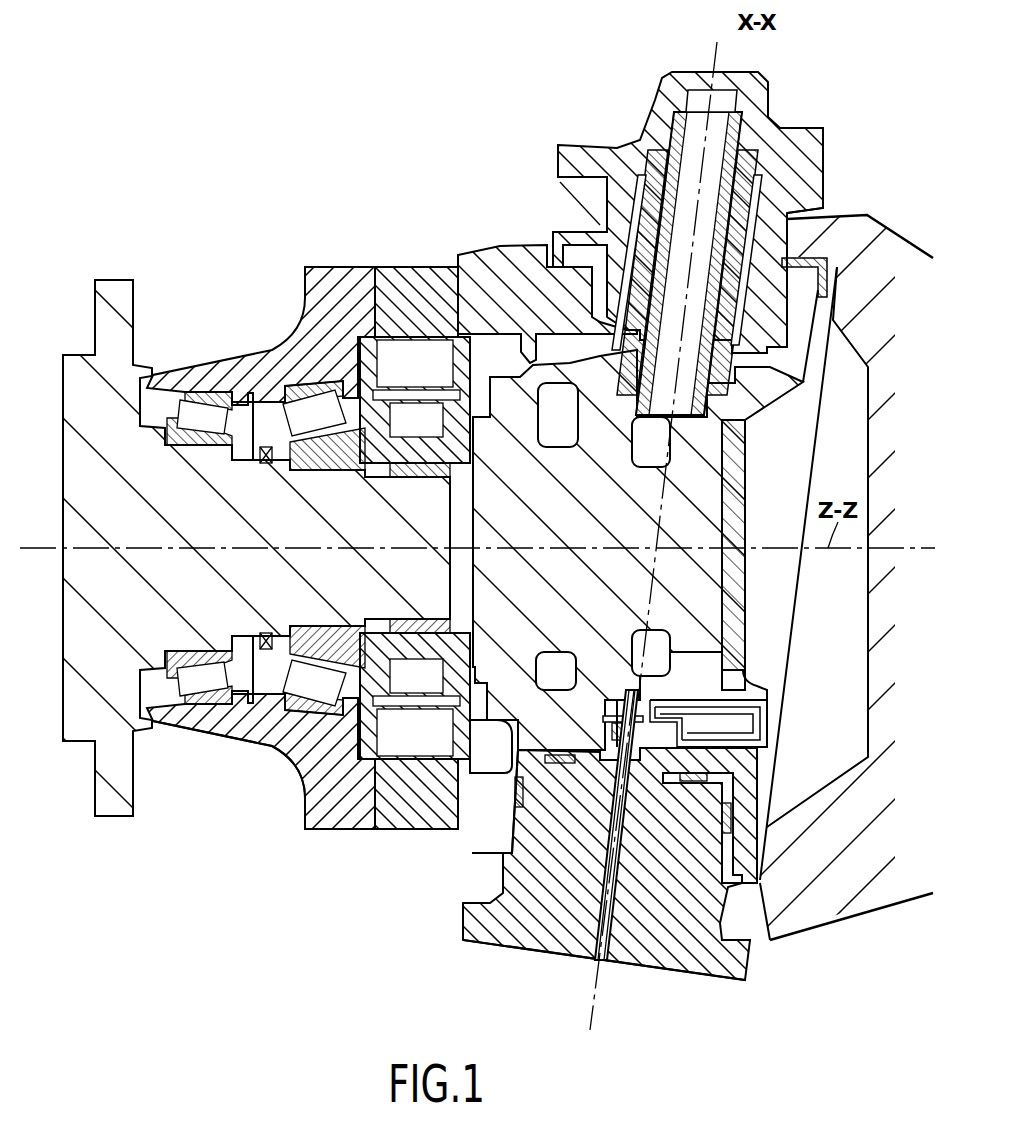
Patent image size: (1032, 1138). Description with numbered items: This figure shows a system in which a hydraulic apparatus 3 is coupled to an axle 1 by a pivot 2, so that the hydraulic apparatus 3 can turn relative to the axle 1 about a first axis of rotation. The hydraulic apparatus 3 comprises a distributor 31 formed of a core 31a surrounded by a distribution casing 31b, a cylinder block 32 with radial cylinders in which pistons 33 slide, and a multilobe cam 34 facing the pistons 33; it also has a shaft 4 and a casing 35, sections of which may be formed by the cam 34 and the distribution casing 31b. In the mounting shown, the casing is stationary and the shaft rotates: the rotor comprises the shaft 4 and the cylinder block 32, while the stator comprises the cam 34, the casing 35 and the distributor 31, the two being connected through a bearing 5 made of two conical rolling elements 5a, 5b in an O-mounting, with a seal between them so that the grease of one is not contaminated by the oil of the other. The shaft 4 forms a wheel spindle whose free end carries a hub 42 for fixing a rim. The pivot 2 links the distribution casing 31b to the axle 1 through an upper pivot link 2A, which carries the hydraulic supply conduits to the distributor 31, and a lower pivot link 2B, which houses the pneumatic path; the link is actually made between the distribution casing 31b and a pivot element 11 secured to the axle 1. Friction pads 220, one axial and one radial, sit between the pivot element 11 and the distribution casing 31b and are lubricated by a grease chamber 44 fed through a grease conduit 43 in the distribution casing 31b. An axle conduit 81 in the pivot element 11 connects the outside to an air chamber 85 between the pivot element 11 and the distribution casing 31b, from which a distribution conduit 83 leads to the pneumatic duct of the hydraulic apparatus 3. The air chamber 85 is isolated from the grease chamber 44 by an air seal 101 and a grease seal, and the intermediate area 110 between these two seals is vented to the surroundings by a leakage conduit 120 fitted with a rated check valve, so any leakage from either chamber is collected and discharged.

The axle 1 is at (828, 868).
The pivot 2 is at (657, 201).
The upper pivot link 2A is at (800, 132).
The lower pivot link 2B is at (609, 885).
The hydraulic apparatus 3 is at (470, 510).
The shaft 4 is at (477, 571).
The bearing 5 is at (266, 476).
The rolling element 5a is at (203, 415).
The rolling element 5b is at (315, 428).
The pivot element 11 is at (685, 965).
The distributor 31 is at (528, 465).
The core 31a is at (530, 480).
The distribution casing 31b is at (545, 300).
The cylinder block 32 is at (398, 478).
The pistons 33 is at (405, 745).
The multilobe cam 34 is at (420, 810).
The casing 35 is at (266, 720).
The hub 42 is at (110, 778).
The grease conduit 43 is at (768, 742).
The grease chamber 44 is at (660, 780).
The axle conduit 81 is at (602, 968).
The distribution conduit 83 is at (757, 713).
The air chamber 85 is at (617, 712).
The air seal 101 is at (603, 718).
The intermediate area 110 is at (612, 748).
The leakage conduit 120 is at (772, 700).
The friction pads 220 is at (535, 790).